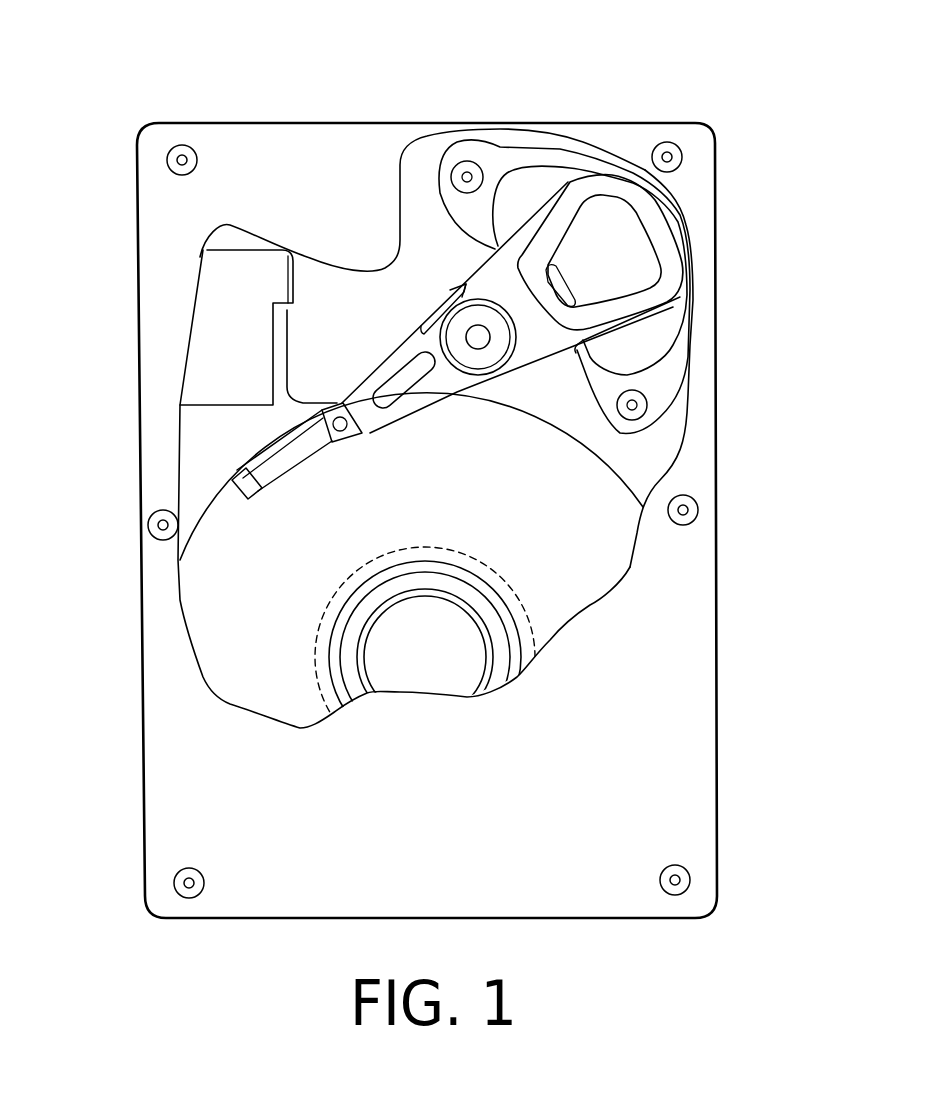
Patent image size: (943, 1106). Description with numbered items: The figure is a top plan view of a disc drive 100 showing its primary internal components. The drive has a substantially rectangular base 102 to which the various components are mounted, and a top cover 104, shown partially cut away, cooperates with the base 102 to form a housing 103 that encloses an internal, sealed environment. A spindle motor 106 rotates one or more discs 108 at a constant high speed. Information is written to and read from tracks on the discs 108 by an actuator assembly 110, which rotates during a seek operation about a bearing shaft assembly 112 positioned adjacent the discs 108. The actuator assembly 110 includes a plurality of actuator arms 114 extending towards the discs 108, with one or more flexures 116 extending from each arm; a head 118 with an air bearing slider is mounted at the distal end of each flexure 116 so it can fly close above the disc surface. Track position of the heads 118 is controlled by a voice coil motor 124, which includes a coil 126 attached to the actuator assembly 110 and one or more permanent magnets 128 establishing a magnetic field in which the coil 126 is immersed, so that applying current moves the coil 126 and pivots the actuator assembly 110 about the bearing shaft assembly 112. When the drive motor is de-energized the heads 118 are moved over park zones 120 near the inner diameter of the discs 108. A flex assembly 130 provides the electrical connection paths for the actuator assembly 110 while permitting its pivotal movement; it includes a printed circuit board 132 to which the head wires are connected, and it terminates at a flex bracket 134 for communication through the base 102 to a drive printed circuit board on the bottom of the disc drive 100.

The disc drive 100 is at (180, 85).
The base 102 is at (210, 467).
The housing 103 is at (658, 457).
The top cover 104 is at (190, 760).
The spindle motor 106 is at (425, 665).
The disc 108 is at (590, 575).
The actuator assembly 110 is at (460, 412).
The bearing shaft assembly 112 is at (495, 350).
The actuator arm 114 is at (418, 400).
The flexure 116 is at (288, 462).
The head 118 is at (237, 497).
The park zone 120 is at (310, 655).
The voice coil motor 124 is at (508, 122).
The coil 126 is at (663, 251).
The permanent magnet 128 is at (508, 203).
The flex assembly 130 is at (398, 340).
The printed circuit board 132 is at (433, 297).
The flex bracket 134 is at (223, 340).